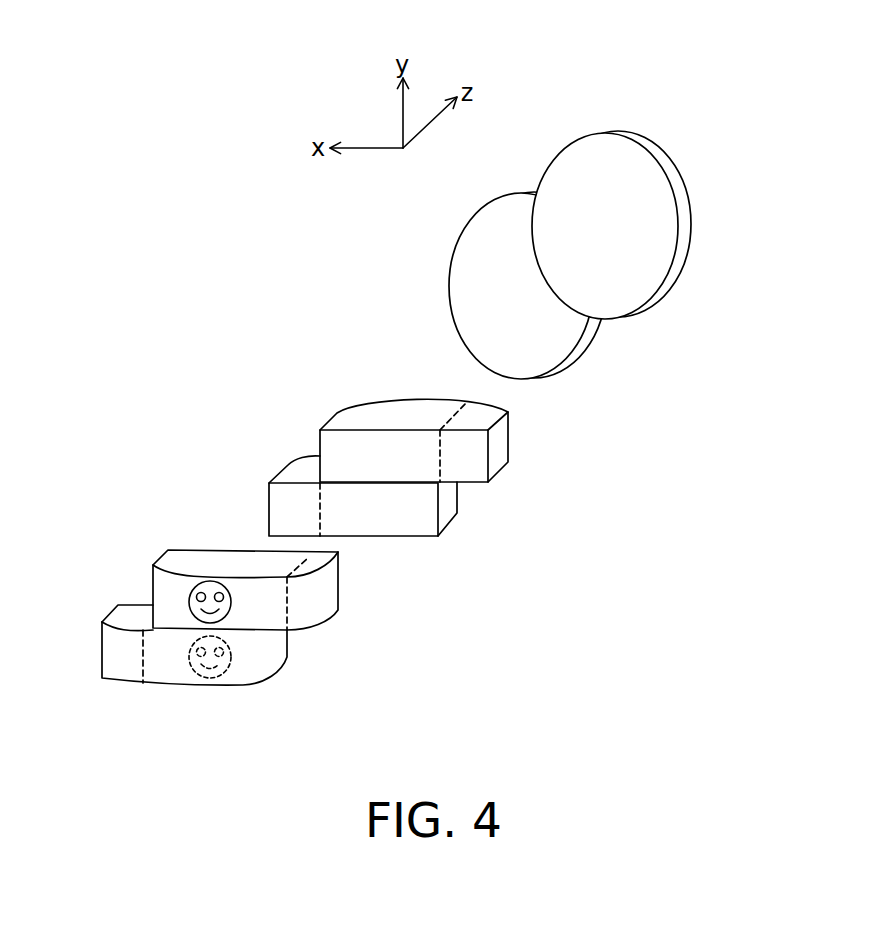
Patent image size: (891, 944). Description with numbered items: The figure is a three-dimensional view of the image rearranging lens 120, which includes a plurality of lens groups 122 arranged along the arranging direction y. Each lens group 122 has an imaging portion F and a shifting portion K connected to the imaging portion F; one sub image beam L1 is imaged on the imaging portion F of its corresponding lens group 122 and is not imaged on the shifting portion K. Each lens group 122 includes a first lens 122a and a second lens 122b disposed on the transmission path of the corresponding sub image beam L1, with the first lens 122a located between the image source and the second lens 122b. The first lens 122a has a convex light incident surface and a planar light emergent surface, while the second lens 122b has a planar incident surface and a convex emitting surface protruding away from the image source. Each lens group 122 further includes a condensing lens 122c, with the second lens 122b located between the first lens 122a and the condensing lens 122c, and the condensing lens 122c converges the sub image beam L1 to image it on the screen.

The image rearranging lens 120 is at (847, 769).
The lens group 122 is at (801, 102).
The first lens 122a is at (182, 560).
The second lens 122b is at (374, 412).
The condensing lens 122c is at (587, 133).
The shifting portion K is at (463, 447).
The imaging portion F is at (338, 452).
The sub image beam L1 is at (187, 603).